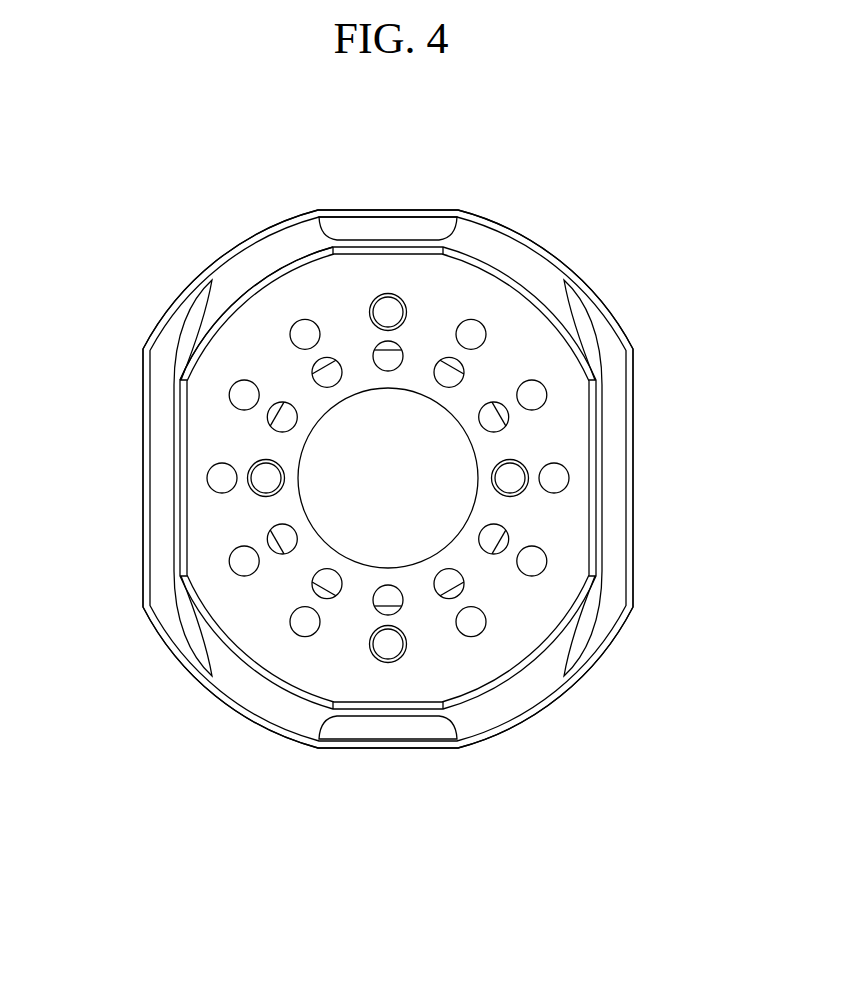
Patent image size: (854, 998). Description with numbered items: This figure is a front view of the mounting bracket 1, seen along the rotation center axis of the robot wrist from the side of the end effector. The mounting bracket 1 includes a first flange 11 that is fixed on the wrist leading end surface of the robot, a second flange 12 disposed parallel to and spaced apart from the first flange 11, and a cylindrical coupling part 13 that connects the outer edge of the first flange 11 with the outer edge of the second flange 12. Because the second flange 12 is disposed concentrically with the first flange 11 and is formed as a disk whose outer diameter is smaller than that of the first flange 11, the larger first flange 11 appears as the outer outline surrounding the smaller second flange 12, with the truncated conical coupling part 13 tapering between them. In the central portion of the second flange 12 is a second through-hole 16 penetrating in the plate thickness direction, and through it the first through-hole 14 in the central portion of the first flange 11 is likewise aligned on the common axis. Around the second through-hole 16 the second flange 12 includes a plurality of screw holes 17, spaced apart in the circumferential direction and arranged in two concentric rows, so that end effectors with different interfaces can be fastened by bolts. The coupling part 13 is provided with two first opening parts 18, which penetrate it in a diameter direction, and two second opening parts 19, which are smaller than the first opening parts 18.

The mounting bracket 1 is at (118, 198).
The first flange 11 is at (650, 567).
The second flange 12 is at (527, 637).
The coupling part 13 is at (292, 236).
The first through-hole 14 is at (494, 534).
The second through-hole 16 is at (402, 390).
The screw holes 17 is at (335, 580).
The first opening parts 18 is at (157, 405).
The second opening parts 19 is at (356, 227).